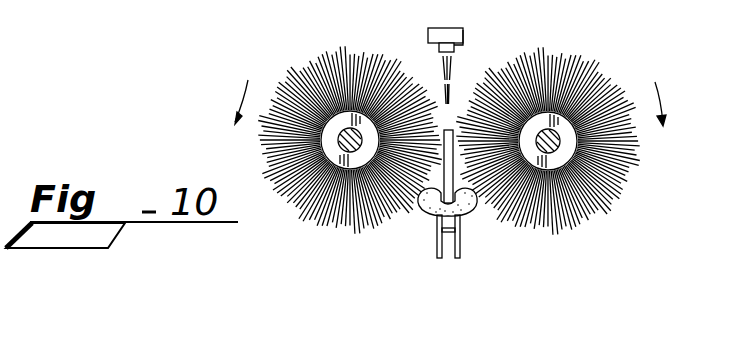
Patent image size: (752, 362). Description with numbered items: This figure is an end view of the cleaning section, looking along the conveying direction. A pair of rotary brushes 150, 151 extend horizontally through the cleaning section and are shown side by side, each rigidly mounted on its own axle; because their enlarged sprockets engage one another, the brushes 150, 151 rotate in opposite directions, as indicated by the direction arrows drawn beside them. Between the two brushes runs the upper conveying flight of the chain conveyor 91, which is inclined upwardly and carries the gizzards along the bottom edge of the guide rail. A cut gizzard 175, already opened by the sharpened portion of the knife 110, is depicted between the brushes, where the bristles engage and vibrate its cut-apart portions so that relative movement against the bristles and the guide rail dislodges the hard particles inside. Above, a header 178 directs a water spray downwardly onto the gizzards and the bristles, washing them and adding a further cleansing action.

The rotary brush 150 is at (310, 50).
The rotary brush 151 is at (590, 63).
The header 178 is at (430, 28).
The knife 110 is at (448, 132).
The cut gizzard 175 is at (467, 208).
The chain conveyor 91 is at (439, 224).